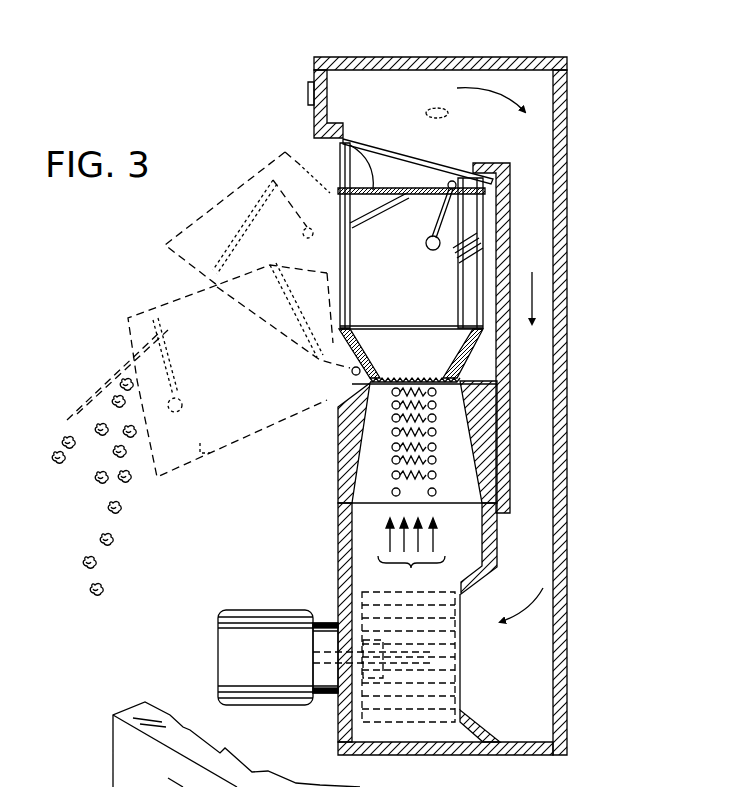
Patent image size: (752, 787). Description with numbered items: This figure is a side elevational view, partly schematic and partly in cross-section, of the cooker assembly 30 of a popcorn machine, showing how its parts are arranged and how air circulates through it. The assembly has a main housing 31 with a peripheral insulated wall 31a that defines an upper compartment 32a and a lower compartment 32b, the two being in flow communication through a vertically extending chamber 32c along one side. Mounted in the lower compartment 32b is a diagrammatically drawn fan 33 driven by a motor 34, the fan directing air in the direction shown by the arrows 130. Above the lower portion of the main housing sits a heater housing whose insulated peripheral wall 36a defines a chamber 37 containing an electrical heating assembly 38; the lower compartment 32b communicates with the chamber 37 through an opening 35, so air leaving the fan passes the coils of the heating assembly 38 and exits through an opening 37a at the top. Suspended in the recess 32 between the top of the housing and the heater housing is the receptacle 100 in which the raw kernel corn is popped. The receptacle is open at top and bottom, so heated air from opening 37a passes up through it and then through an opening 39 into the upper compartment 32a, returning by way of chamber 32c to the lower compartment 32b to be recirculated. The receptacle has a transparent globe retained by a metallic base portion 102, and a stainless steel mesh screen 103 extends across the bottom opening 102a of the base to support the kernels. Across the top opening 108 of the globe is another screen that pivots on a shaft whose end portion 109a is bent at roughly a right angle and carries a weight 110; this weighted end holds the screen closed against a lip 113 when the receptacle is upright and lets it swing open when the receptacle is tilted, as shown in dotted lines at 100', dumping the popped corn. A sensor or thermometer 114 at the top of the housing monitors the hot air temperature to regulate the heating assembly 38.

The cooker assembly 30 is at (563, 48).
The main housing 31 is at (344, 62).
The peripheral insulated wall 31a is at (558, 150).
The recess 32 is at (507, 267).
The upper compartment 32a is at (397, 90).
The lower compartment 32b is at (456, 733).
The vertically extending chamber 32c is at (557, 343).
The fan 33 is at (435, 655).
The motor 34 is at (280, 664).
The opening 35 is at (457, 498).
The insulated peripheral wall 36a is at (337, 480).
The chamber 37 is at (490, 505).
The opening 37a is at (480, 420).
The electrical heating assembly 38 is at (428, 430).
The opening 39 is at (421, 160).
The receptacle 100 is at (411, 236).
The receptacle in tilted position 100' is at (208, 314).
The metallic base portion 102 is at (500, 358).
The bottom opening 102a is at (500, 390).
The stainless steel mesh screen 103 is at (398, 377).
The top opening 108 is at (342, 144).
The end portion 109a is at (427, 239).
The weight 110 is at (437, 253).
The lip 113 is at (376, 214).
The sensor 114 is at (308, 88).
The arrows 130 is at (411, 553).